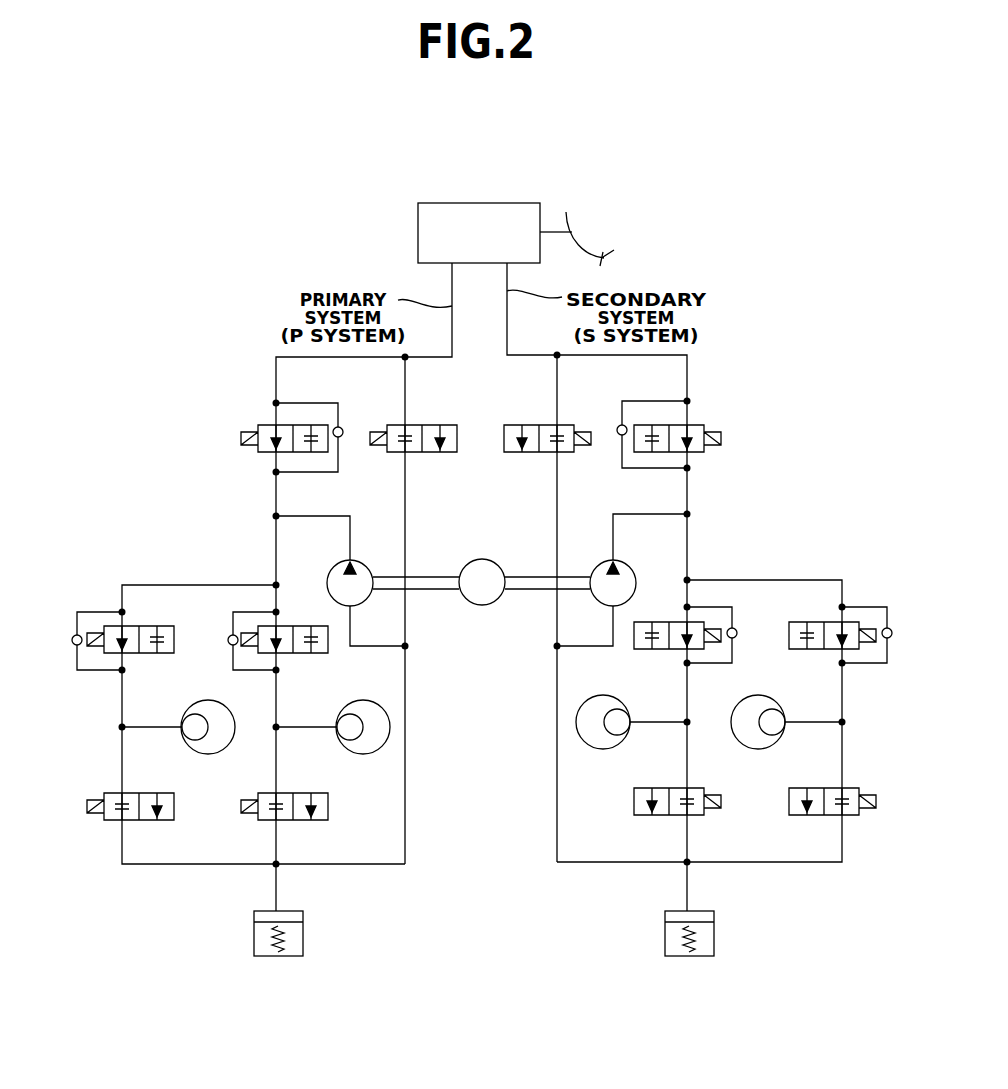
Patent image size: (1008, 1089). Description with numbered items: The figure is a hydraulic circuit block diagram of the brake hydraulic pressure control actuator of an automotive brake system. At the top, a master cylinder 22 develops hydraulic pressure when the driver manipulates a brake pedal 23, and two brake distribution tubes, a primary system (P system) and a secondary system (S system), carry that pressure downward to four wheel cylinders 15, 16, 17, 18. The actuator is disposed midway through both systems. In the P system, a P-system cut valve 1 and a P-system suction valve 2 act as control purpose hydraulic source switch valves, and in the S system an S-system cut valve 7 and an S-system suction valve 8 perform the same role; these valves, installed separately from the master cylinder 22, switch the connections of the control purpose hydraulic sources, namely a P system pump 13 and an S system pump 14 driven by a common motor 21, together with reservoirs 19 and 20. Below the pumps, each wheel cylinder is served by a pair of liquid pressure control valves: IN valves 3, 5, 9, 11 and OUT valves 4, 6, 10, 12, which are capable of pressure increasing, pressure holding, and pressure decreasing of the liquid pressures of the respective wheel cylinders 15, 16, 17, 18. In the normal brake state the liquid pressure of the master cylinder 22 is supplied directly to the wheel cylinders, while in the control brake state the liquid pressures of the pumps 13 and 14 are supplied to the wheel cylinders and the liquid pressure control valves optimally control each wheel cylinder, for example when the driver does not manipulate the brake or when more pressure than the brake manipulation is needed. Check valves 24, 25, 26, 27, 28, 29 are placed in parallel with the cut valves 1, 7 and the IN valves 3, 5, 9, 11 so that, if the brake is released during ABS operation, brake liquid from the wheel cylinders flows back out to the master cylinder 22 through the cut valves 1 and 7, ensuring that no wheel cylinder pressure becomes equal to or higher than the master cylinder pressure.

The P-system cut valve 1 is at (262, 421).
The P-system suction valve 2 is at (388, 421).
The IN valve 3 is at (108, 621).
The OUT valve 4 is at (116, 825).
The IN valve 5 is at (263, 621).
The OUT valve 6 is at (262, 823).
The S-system cut valve 7 is at (696, 421).
The S-system suction valve 8 is at (568, 421).
The IN valve 9 is at (700, 617).
The OUT valve 10 is at (630, 806).
The IN valve 11 is at (855, 617).
The OUT valve 12 is at (785, 806).
The P system pump 13 is at (340, 565).
The S system pump 14 is at (625, 565).
The wheel cylinder 15 is at (186, 746).
The wheel cylinder 16 is at (339, 746).
The wheel cylinder 17 is at (627, 739).
The wheel cylinder 18 is at (782, 739).
The reservoir 19 is at (303, 935).
The reservoir 20 is at (714, 935).
The motor 21 is at (482, 606).
The master cylinder 22 is at (500, 203).
The brake pedal 23 is at (599, 239).
The check valve 24 is at (79, 646).
The check valve 25 is at (228, 645).
The check valve 26 is at (617, 435).
The check valve 27 is at (737, 638).
The check valve 28 is at (886, 639).
The check valve 29 is at (343, 437).